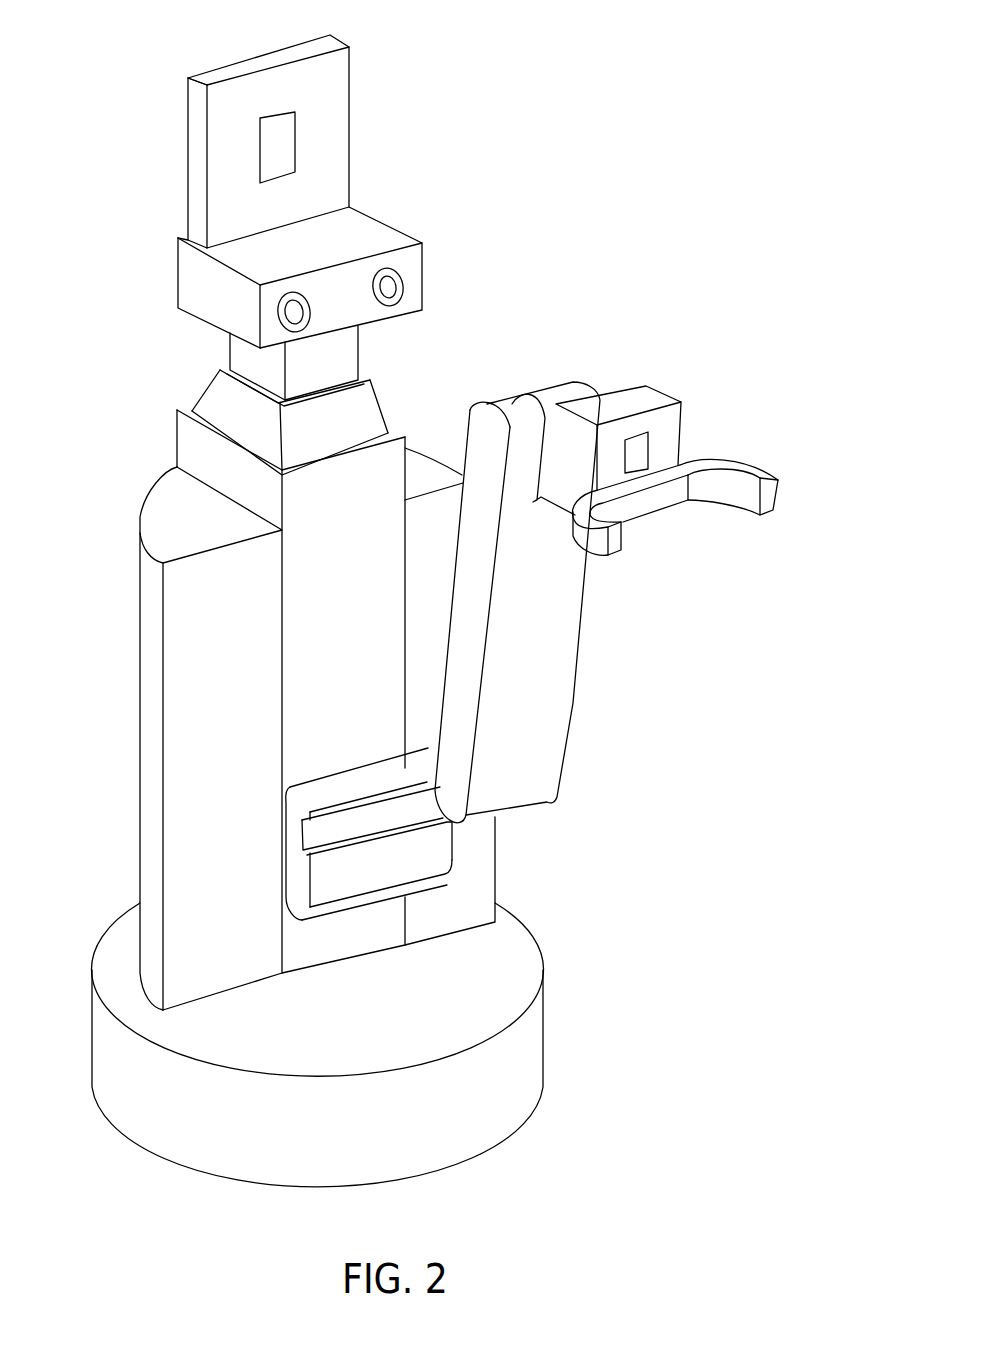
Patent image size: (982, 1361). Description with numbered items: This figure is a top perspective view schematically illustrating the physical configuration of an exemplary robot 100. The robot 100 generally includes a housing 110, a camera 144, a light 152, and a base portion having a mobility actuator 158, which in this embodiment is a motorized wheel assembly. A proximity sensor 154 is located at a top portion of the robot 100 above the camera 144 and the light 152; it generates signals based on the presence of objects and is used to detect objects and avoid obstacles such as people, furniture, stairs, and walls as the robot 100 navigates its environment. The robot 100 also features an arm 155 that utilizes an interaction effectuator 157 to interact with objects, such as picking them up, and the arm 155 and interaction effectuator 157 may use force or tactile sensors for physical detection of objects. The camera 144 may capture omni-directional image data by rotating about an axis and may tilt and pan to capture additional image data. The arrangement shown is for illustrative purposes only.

The robot 100 is at (690, 133).
The housing 110 is at (298, 583).
The camera 144 is at (297, 298).
The light 152 is at (400, 283).
The proximity sensor 154 is at (277, 120).
The arm 155 is at (580, 635).
The interaction effectuator 157 is at (742, 461).
The mobility actuator 158 is at (547, 1037).